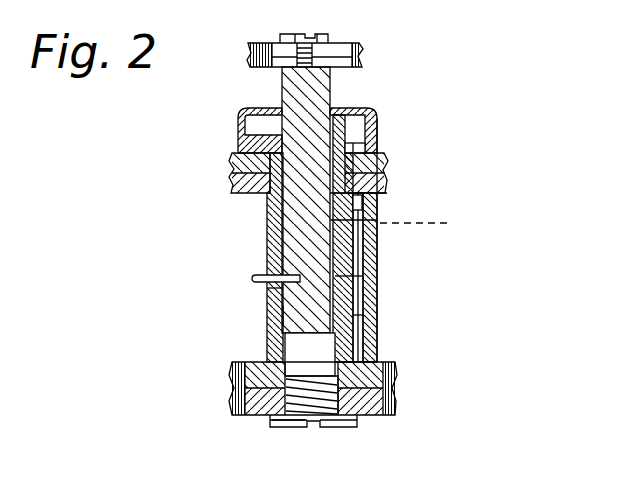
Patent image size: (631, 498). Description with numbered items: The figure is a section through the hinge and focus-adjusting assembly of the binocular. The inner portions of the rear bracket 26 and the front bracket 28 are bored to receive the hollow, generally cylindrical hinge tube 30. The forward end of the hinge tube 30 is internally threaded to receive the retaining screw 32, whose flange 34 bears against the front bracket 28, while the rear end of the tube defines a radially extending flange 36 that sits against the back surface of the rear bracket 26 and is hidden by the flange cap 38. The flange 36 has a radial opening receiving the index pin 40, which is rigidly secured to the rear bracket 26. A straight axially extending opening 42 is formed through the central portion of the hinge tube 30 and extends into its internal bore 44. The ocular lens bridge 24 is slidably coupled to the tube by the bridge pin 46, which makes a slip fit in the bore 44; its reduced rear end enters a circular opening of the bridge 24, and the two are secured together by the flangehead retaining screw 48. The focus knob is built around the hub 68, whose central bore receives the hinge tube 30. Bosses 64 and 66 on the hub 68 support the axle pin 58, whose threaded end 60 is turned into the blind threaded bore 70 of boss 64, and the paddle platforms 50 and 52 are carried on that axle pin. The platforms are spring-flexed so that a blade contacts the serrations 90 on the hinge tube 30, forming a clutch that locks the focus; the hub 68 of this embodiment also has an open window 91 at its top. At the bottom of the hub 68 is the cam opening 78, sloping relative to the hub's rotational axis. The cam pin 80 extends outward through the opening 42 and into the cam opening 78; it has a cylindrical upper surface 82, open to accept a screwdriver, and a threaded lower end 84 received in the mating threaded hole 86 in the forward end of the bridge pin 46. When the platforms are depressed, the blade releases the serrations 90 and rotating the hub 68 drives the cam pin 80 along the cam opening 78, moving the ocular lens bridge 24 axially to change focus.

The ocular lens bridge 24 is at (365, 47).
The rear bracket 26 is at (388, 178).
The front bracket 28 is at (396, 396).
The hinge tube 30 is at (238, 131).
The retaining screw 32 is at (322, 428).
The flange 34 is at (292, 428).
The radially extending flange 36 is at (380, 117).
The flange cap 38 is at (372, 110).
The index pin 40 is at (374, 142).
The axially extending opening 42 is at (268, 246).
The internal bore 44 is at (283, 376).
The bridge pin 46 is at (333, 97).
The flangehead retaining screw 48 is at (325, 36).
The paddle platform 50 is at (380, 256).
The paddle platform 52 is at (380, 335).
The axle pin 58 is at (372, 295).
The threaded end 60 is at (450, 222).
The boss 64 is at (380, 198).
The boss 66 is at (380, 355).
The hub 68 is at (300, 357).
The threaded bore 70 is at (380, 193).
The cam opening 78 is at (285, 322).
The cam pin 80 is at (252, 279).
The cylindrical upper surface 82 is at (247, 293).
The threaded lower end 84 is at (268, 314).
The threaded hole 86 is at (380, 278).
The serrations 90 is at (437, 226).
The open window 91 is at (372, 315).